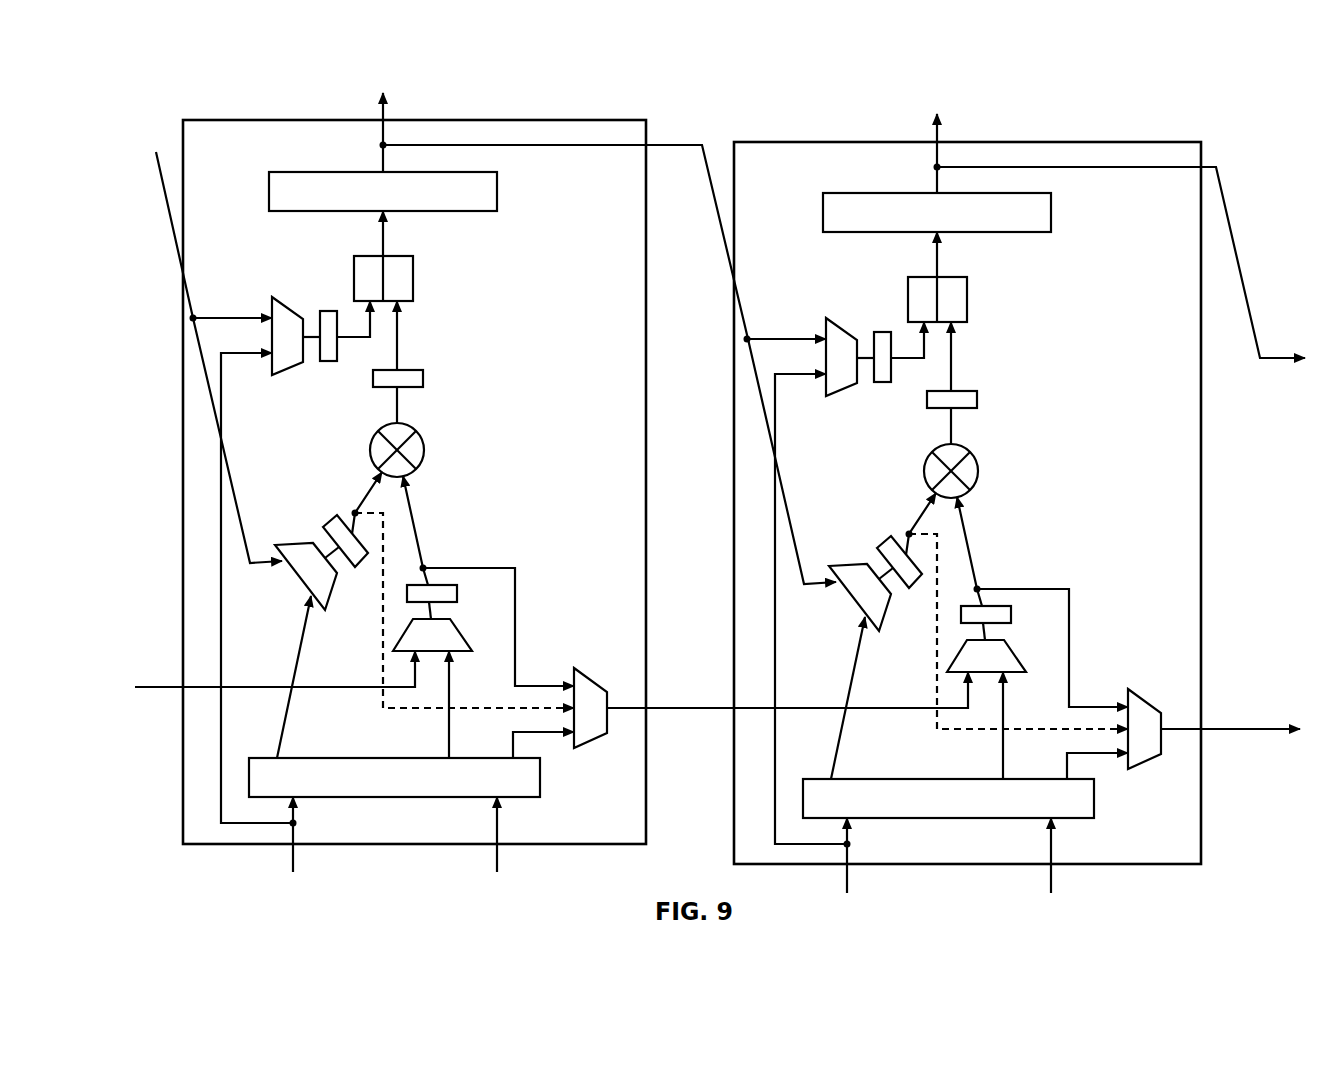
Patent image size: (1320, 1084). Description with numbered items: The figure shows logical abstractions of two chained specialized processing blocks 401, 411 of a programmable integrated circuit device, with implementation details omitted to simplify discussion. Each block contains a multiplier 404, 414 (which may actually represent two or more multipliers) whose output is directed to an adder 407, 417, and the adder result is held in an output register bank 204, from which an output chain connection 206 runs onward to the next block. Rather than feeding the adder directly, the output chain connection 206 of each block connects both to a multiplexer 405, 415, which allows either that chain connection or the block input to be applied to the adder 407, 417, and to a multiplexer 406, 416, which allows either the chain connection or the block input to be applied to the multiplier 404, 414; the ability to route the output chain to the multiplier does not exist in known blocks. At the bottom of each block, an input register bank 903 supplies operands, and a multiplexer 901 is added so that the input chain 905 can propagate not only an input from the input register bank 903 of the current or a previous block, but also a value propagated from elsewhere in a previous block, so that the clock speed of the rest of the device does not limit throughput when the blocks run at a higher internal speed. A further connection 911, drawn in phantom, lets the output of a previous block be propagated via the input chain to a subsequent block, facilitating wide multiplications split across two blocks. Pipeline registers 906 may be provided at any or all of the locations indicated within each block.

The DSP block 401 is at (245, 118).
The DSP block 411 is at (797, 141).
The output register bank 204 is at (335, 172).
The output chain connection 206 is at (168, 217).
The multiplexer 405 is at (285, 305).
The multiplexer 415 is at (839, 326).
The adder 407 is at (403, 256).
The adder 417 is at (957, 277).
The pipeline register 906 is at (373, 378).
The multiplier 404 is at (424, 450).
The multiplier 414 is at (978, 471).
The multiplexer 406 is at (293, 541).
The multiplexer 416 is at (847, 562).
The further connection 911 is at (383, 702).
The input chain 905 is at (157, 690).
The multiplexer 901 is at (591, 678).
The input register bank 903 is at (541, 782).